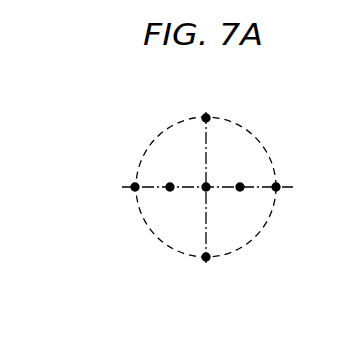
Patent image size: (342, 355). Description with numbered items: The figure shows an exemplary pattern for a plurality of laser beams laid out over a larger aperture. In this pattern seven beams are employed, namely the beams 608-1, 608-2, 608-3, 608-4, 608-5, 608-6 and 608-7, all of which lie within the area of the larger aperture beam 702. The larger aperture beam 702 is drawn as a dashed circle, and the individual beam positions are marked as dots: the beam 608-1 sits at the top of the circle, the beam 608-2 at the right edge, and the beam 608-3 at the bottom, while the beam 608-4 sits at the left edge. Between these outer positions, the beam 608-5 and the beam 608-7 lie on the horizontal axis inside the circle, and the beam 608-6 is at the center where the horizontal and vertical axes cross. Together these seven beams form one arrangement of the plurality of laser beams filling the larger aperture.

The larger aperture beam 702 is at (243, 128).
The beam 608-1 is at (206, 117).
The beam 608-2 is at (276, 186).
The beam 608-3 is at (206, 258).
The beam 608-4 is at (135, 189).
The beam 608-5 is at (170, 189).
The beam 608-6 is at (206, 187).
The beam 608-7 is at (240, 189).